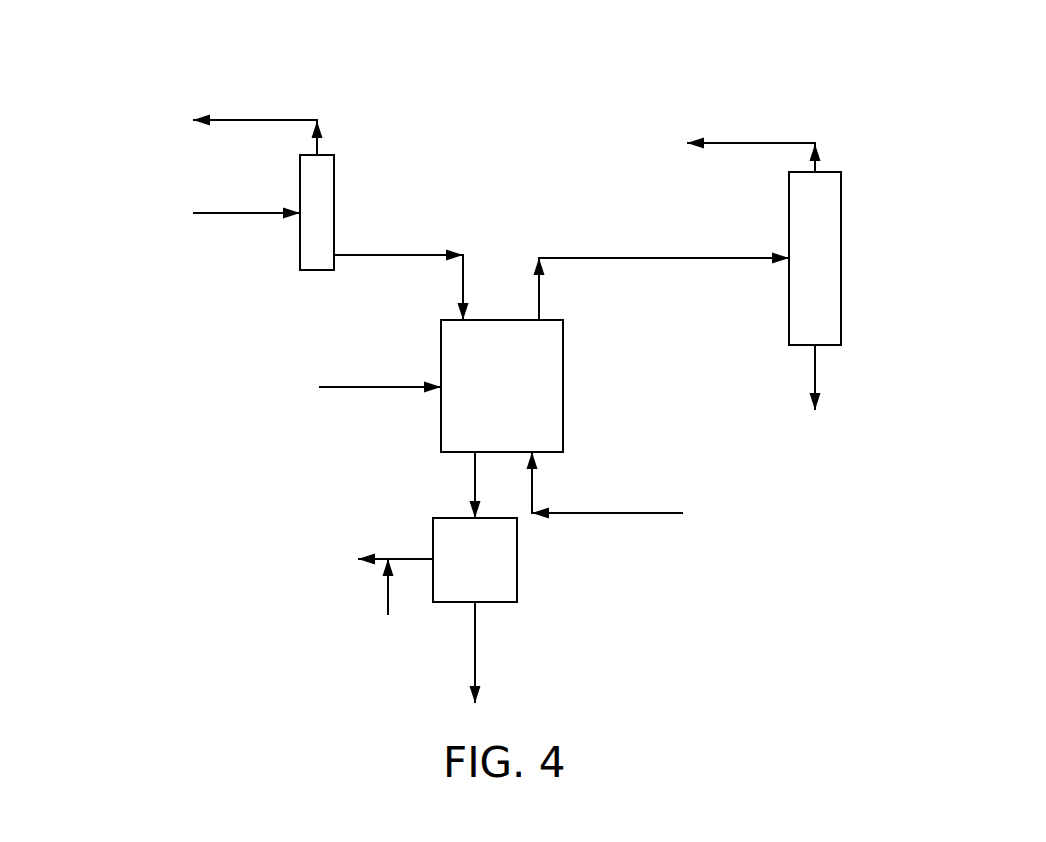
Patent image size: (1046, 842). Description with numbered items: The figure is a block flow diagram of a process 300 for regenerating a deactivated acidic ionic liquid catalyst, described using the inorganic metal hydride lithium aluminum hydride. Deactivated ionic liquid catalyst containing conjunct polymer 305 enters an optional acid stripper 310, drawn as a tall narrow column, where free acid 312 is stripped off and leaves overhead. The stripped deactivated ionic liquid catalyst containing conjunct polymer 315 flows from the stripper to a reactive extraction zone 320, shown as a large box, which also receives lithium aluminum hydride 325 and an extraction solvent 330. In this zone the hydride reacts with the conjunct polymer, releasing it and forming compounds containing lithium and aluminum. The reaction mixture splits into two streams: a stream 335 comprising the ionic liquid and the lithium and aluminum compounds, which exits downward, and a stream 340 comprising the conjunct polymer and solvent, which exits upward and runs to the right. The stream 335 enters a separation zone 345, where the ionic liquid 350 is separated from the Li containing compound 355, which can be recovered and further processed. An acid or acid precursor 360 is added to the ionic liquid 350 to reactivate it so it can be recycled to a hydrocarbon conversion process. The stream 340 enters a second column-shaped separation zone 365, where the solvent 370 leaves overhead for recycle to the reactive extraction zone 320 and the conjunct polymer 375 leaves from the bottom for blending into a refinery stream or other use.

The process 300 is at (150, 88).
The deactivated ionic liquid catalyst containing conjunct polymer 305 is at (207, 212).
The acid stripper 310 is at (333, 154).
The free acid 312 is at (280, 120).
The stripped deactivated ionic liquid catalyst containing conjunct polymer 315 is at (352, 255).
The reactive extraction zone 320 is at (552, 320).
The lithium aluminum hydride 325 is at (342, 386).
The extraction solvent 330 is at (535, 488).
The stream comprising the ionic liquid and the compounds containing Li and Al 335 is at (474, 482).
The stream comprising the conjunct polymer and solvent 340 is at (538, 293).
The separation zone 345 is at (519, 568).
The ionic liquid 350 is at (401, 556).
The Li containing compound 355 is at (478, 653).
The acid or acid precursor 360 is at (385, 600).
The separation zone 365 is at (826, 172).
The solvent 370 is at (738, 143).
The conjunct polymer 375 is at (818, 367).